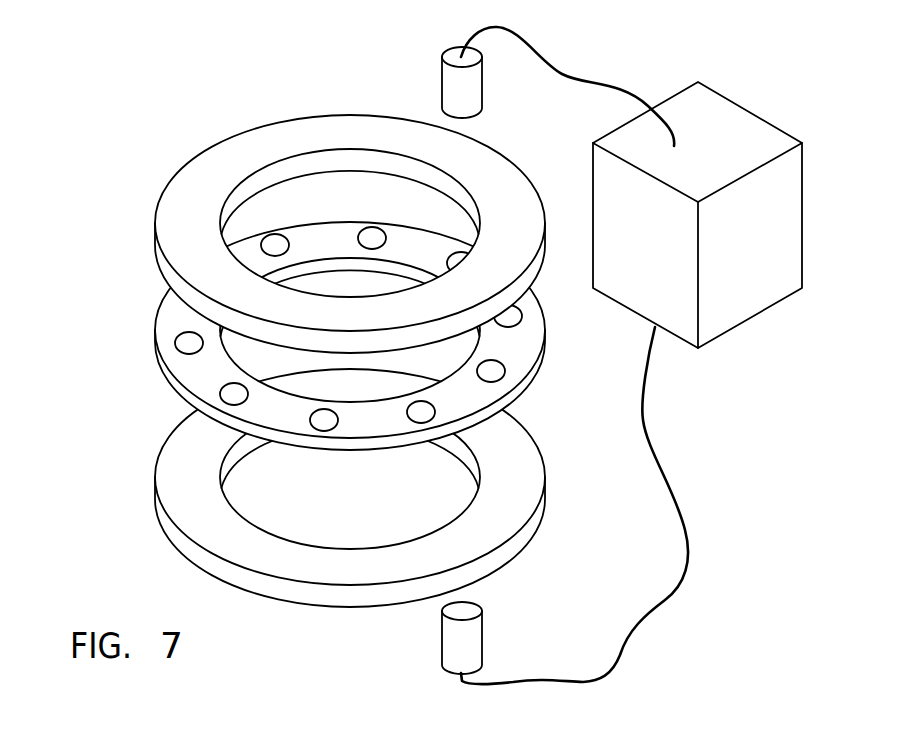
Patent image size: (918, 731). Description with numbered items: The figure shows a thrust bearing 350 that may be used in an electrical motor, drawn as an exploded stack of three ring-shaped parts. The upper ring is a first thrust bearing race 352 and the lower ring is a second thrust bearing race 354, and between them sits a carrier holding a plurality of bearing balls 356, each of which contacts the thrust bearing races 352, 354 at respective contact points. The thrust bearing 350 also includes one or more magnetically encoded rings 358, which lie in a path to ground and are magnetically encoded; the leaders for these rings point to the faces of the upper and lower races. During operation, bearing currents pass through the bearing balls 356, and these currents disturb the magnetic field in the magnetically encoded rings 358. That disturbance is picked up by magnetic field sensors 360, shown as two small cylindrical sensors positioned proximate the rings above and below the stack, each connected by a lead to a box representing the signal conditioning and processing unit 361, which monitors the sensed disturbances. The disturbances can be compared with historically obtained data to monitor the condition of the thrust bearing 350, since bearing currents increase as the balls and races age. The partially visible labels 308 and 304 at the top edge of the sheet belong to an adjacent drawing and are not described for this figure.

The thrust bearing 350 is at (88, 176).
The first thrust bearing race 352 is at (170, 275).
The second thrust bearing race 354 is at (183, 543).
The bearing balls 356 is at (174, 341).
The magnetically encoded rings 358 is at (223, 152).
The magnetic field sensors 360 is at (447, 85).
The signal conditioning and processing unit 361 is at (728, 108).
The sensor 308 is at (400, 11).
The housing 304 is at (342, 5).